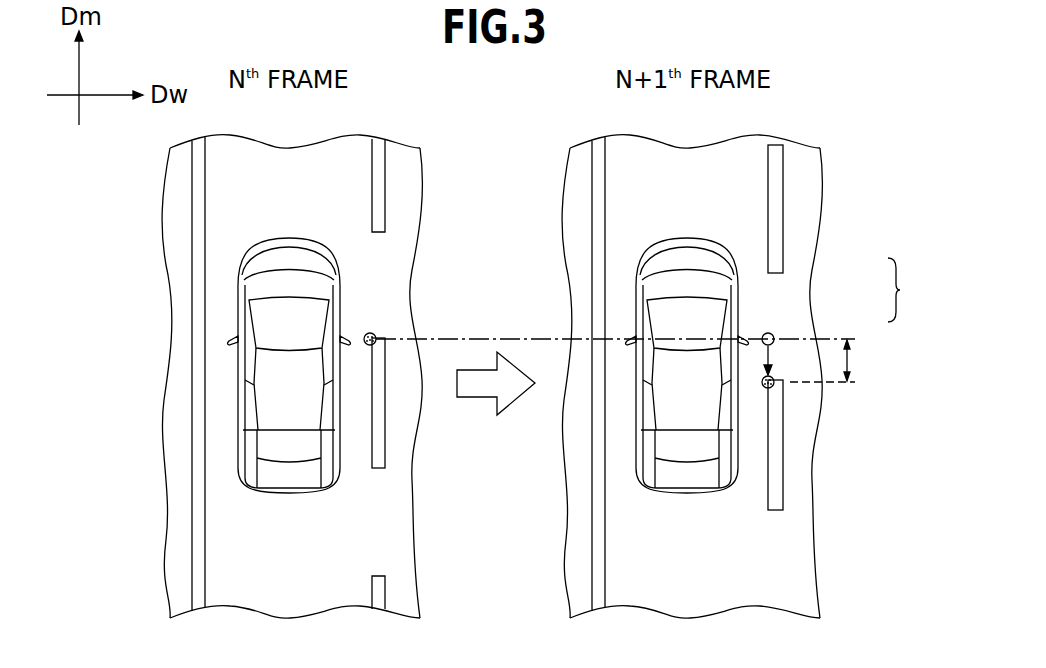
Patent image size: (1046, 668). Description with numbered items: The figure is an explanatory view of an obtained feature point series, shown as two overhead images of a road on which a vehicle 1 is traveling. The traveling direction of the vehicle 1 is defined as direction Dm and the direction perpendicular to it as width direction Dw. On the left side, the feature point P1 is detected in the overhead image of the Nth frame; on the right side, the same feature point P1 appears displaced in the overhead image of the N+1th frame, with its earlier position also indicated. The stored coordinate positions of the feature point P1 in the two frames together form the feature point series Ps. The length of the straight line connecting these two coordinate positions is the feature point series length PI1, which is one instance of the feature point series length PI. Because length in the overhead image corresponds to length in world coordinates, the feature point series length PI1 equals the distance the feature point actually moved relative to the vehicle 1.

The vehicle 1 is at (303, 232).
The feature point P1 is at (373, 332).
The feature point series Ps is at (909, 290).
The feature point series length PI1 is at (849, 362).
The feature point series length PI is at (872, 361).